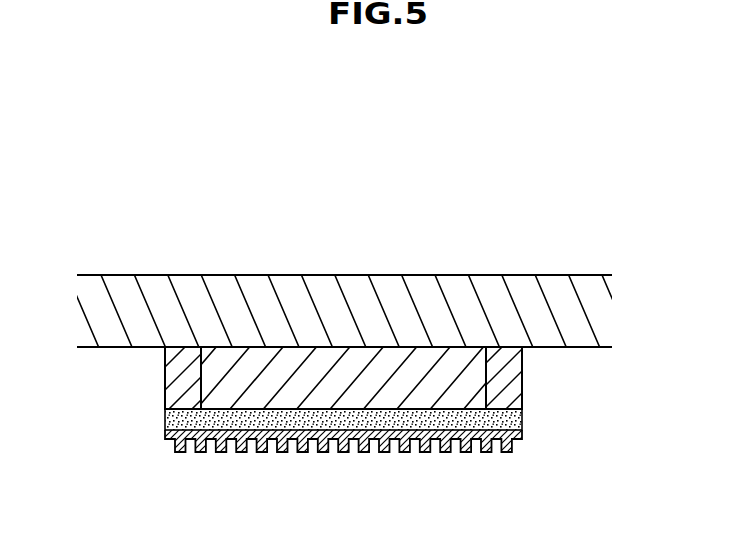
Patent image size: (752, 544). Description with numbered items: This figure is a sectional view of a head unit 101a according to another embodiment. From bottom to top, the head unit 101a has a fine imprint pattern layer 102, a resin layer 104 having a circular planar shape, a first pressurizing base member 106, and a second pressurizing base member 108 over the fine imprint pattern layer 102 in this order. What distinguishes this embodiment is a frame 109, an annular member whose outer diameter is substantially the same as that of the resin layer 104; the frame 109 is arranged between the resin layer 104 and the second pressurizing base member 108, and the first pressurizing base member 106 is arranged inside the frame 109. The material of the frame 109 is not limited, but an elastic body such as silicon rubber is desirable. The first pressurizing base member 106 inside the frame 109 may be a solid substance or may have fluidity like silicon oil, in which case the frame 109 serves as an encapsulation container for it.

The head unit 101a is at (512, 216).
The second pressurizing base member 108 is at (555, 282).
The first pressurizing base member 106 is at (477, 373).
The frame 109 is at (183, 387).
The resin layer 104 is at (522, 425).
The fine imprint pattern layer 102 is at (505, 448).